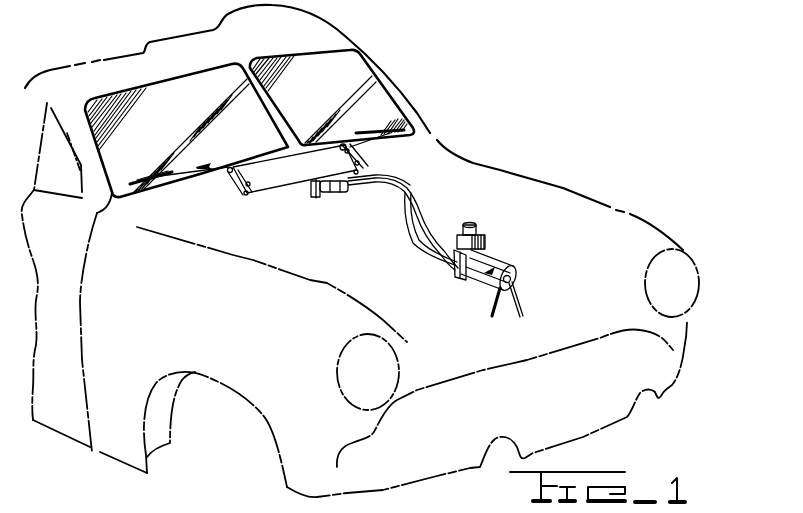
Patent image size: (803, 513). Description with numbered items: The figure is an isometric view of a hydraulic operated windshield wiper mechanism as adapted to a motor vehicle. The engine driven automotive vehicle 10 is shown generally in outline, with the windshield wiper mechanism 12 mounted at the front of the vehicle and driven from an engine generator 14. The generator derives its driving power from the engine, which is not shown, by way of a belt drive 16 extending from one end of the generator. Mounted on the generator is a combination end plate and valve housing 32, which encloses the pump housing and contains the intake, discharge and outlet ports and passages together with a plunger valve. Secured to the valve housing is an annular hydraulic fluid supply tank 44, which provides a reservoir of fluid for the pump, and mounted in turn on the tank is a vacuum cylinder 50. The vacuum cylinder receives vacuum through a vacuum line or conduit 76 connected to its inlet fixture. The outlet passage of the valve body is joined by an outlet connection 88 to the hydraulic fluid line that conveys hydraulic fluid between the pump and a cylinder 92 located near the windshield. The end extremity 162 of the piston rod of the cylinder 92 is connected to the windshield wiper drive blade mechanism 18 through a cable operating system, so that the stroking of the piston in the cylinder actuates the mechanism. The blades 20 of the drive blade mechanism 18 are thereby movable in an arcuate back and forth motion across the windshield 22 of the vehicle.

The engine driven automotive vehicle 10 is at (567, 188).
The windshield 22 is at (345, 75).
The blades 20 is at (149, 180).
The windshield wiper drive blade mechanism 18 is at (261, 200).
The end extremity of piston rod 162 is at (313, 192).
The cylinder 92 is at (338, 200).
The vacuum line or conduit 76 is at (435, 206).
The outlet connection 88 is at (410, 235).
The windshield wiper mechanism 12 is at (487, 260).
The engine generator 14 is at (497, 268).
The combination end plate and valve housing 32 is at (452, 258).
The hydraulic fluid supply tank 44 is at (478, 247).
The vacuum cylinder 50 is at (472, 230).
The belt drive 16 is at (520, 297).